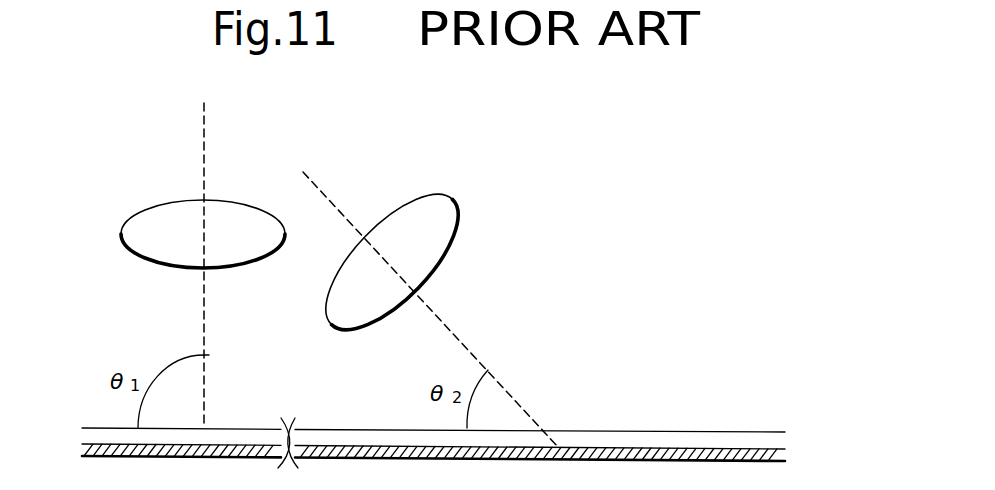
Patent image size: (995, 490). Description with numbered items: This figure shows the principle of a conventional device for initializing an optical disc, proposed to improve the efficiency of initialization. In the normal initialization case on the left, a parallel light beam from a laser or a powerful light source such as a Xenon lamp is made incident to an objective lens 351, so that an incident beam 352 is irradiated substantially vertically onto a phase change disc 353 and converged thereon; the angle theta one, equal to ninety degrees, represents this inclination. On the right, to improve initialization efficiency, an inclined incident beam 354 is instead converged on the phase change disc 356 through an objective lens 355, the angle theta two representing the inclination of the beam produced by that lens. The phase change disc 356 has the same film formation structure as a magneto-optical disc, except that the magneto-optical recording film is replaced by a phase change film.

The objective lens 351 is at (148, 258).
The incident beam 352 is at (200, 131).
The phase change disc 353 is at (251, 437).
The inclined incident beam 354 is at (327, 194).
The objective lens 355 is at (453, 208).
The phase change disc 356 is at (365, 438).